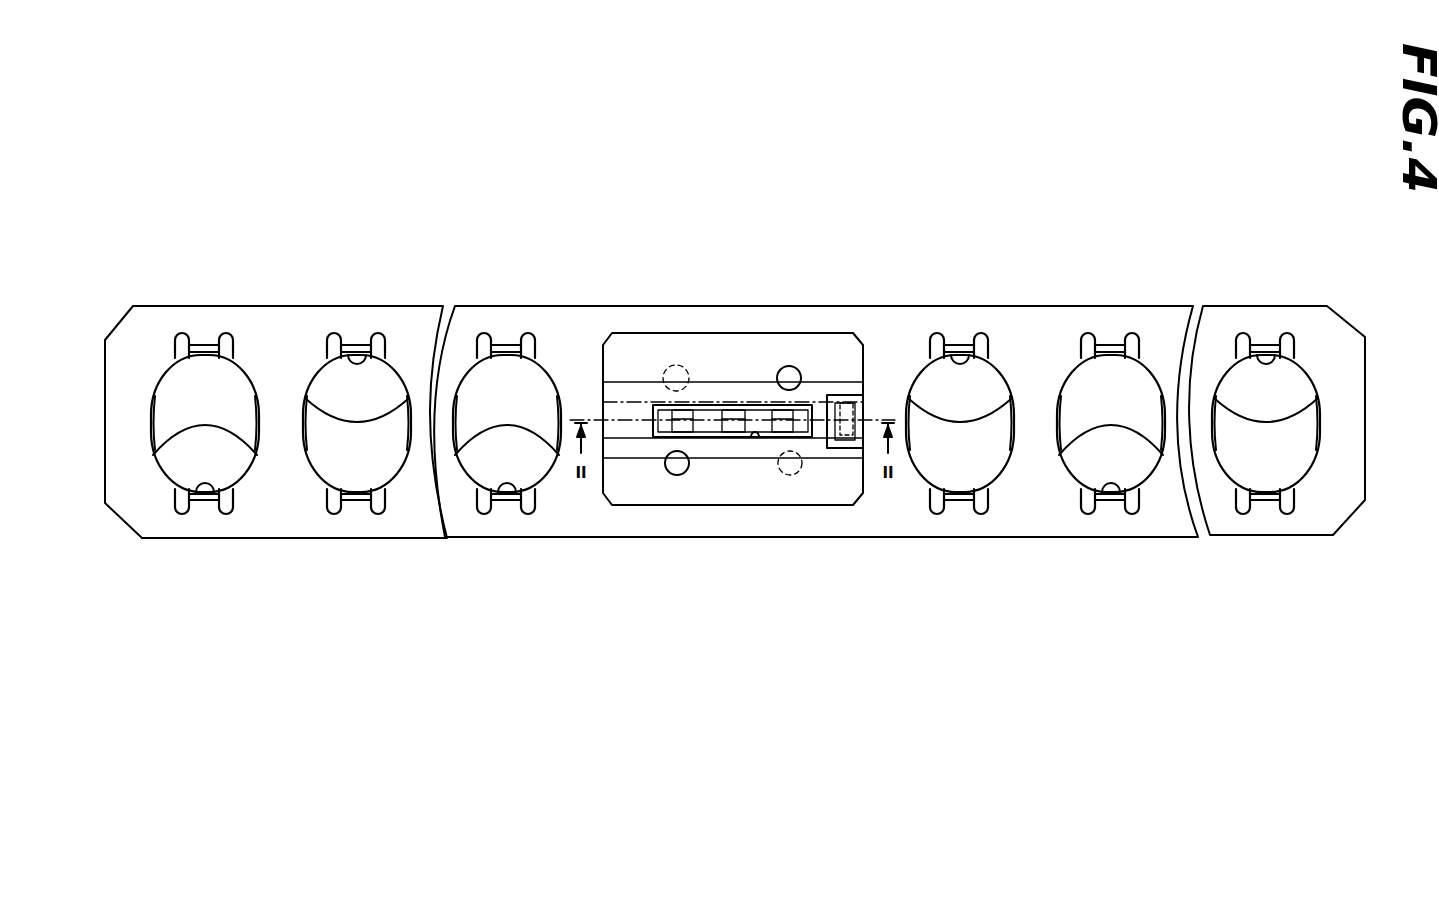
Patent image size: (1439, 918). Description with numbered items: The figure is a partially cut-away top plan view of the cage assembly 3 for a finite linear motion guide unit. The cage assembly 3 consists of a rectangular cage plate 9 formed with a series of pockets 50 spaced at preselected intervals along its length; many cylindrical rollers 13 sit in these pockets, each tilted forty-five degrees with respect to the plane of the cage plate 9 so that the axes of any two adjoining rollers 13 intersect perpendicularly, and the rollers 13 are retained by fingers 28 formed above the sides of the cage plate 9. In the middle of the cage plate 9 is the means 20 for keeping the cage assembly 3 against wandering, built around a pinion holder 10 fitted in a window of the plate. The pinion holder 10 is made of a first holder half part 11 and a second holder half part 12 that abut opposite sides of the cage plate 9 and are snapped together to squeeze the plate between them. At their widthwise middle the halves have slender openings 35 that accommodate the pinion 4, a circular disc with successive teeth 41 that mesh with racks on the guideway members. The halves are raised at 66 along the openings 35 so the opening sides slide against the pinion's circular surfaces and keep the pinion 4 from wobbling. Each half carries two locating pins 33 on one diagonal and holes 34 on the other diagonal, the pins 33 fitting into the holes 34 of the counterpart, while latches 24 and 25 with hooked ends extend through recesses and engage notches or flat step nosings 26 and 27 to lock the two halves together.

The cage assembly 3 is at (735, 429).
The cage plate 9 is at (1058, 322).
The pinion 4 is at (730, 405).
The pinion holder 10 is at (732, 433).
The first holder half part 11 is at (732, 433).
The second holder half part 12 is at (732, 433).
The cylindrical roller 13 is at (475, 405).
The means to keep the cage assembly against wandering 20 is at (831, 335).
The latch 24 is at (888, 351).
The latch 25 is at (840, 405).
The notch or flat step nosing 26 is at (863, 496).
The notch or flat step nosing 27 is at (834, 450).
The finger 28 is at (352, 346).
The locating pin 33 is at (676, 365).
The hole 34 is at (789, 366).
The slender opening 35 is at (757, 438).
The teeth 41 is at (692, 408).
The pocket 50 is at (546, 435).
The raised portion 66 is at (635, 397).